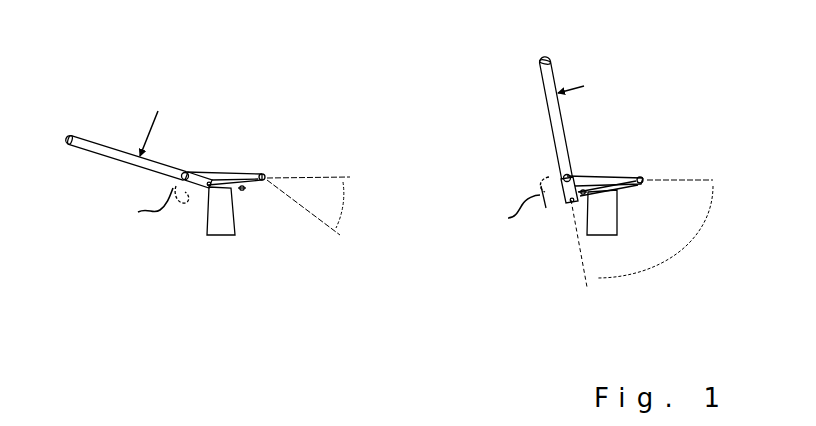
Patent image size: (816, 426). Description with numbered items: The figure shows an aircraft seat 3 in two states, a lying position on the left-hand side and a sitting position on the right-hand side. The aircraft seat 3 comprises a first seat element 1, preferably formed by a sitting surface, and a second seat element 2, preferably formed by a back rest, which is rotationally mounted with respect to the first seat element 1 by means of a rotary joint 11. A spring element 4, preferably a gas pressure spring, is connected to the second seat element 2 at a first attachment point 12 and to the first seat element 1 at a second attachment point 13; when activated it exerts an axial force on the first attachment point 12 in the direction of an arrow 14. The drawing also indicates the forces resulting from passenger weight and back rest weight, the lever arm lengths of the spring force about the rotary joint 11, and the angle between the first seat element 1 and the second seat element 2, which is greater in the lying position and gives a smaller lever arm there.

The first seat element 1 is at (224, 173).
The second seat element 2 is at (109, 146).
The aircraft seat 3 is at (87, 77).
The spring element 4 is at (262, 207).
The rotary joint 11 is at (184, 173).
The first attachment point 12 is at (207, 192).
The second attachment point 13 is at (262, 175).
The arrow 14 is at (242, 193).